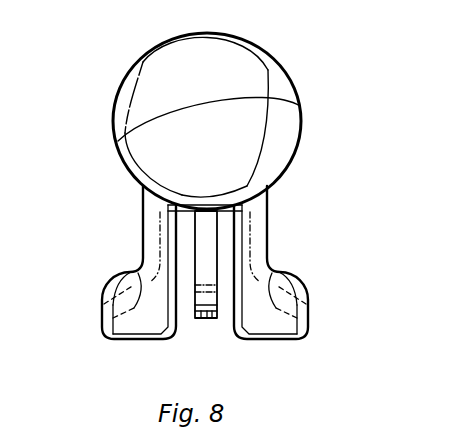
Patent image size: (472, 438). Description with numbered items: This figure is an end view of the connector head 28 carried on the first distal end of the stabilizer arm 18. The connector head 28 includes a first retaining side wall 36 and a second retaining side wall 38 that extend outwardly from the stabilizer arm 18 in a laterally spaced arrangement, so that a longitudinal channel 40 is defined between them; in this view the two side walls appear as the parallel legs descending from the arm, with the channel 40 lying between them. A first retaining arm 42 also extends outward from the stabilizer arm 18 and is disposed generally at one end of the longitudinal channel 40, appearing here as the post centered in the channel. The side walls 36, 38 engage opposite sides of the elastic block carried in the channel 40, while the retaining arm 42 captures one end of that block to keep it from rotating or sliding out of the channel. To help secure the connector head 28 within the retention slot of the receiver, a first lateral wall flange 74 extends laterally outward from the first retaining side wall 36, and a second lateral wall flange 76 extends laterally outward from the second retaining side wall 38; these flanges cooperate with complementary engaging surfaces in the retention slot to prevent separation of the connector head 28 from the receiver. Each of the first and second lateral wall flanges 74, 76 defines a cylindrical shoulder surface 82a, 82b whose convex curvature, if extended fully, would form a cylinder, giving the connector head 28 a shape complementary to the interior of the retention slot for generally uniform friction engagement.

The stabilizer arm 18 is at (257, 70).
The connector head 28 is at (117, 210).
The first retaining side wall 36 is at (105, 275).
The second retaining side wall 38 is at (313, 270).
The longitudinal channel 40 is at (183, 332).
The first retaining arm 42 is at (202, 320).
The first lateral wall flange 74 is at (100, 308).
The second lateral wall flange 76 is at (307, 308).
The cylindrical shoulder surface 82a is at (108, 278).
The cylindrical shoulder surface 82b is at (298, 277).